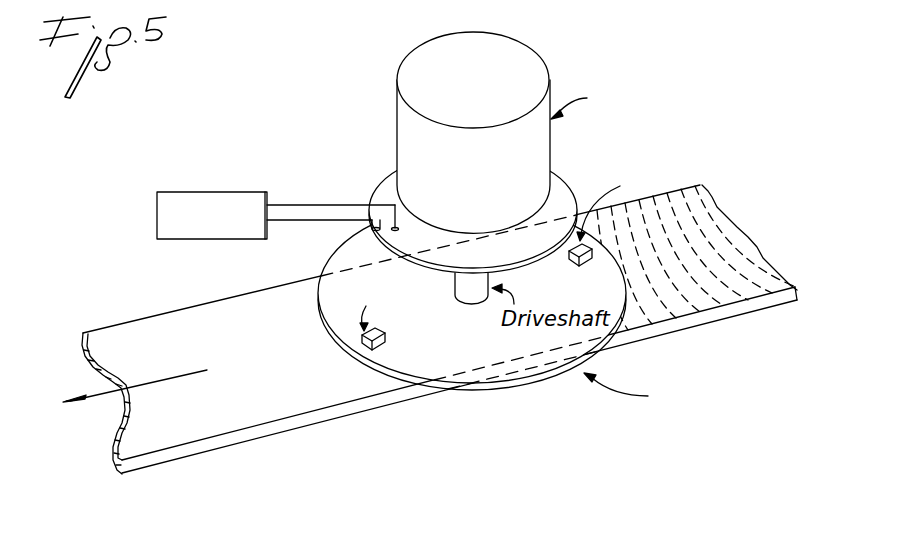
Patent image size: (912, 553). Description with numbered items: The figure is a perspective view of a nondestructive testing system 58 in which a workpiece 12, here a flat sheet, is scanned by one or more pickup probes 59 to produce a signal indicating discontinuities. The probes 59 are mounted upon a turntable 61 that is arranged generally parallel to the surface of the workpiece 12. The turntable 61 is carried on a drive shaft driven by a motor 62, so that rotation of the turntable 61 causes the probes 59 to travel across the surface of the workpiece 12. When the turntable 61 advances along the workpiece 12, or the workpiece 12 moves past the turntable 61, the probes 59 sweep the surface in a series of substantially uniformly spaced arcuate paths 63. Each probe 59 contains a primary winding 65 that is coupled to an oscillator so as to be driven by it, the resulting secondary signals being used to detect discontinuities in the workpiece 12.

The workpiece 12 is at (282, 399).
The system 58 is at (189, 205).
The pickup probe 59 is at (384, 334).
The turntable 61 is at (514, 392).
The motor 62 is at (530, 70).
The arcuate paths 63 is at (728, 262).
The primary winding 65 is at (382, 189).